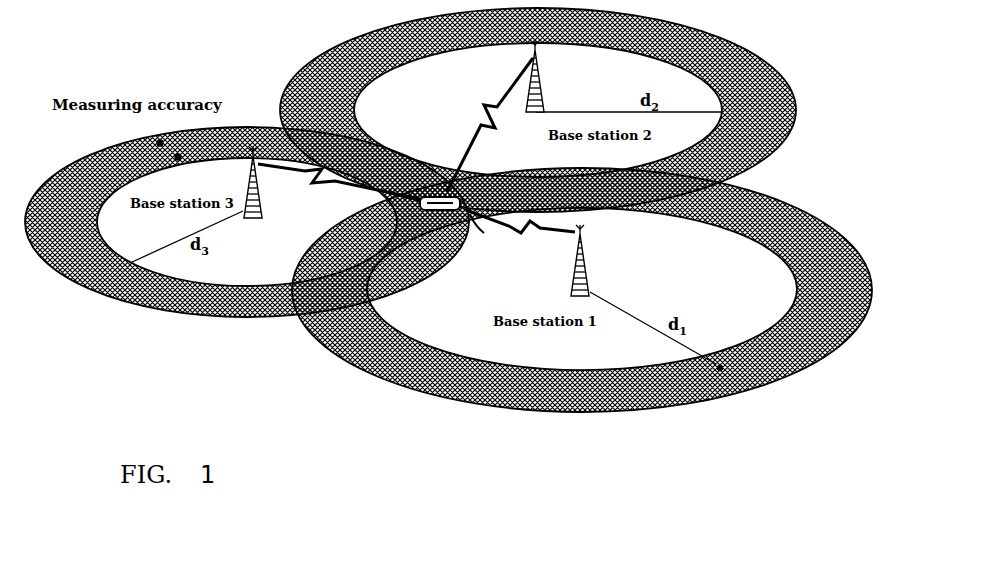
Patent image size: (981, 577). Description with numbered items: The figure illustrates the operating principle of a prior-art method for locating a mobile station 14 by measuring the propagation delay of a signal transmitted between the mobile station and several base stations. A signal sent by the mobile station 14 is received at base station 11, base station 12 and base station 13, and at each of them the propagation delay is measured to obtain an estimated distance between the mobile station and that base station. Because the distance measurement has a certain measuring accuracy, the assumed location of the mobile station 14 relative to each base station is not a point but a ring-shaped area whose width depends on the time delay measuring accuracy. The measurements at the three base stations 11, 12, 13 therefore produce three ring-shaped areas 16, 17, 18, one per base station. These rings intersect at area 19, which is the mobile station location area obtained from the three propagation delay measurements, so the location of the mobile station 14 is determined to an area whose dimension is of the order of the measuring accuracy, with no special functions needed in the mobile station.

The base station 11 is at (592, 271).
The base station 12 is at (546, 87).
The base station 13 is at (241, 178).
The mobile station 14 is at (457, 244).
The ring-shaped area 16 is at (795, 206).
The ring-shaped area 17 is at (745, 45).
The ring-shaped area 18 is at (206, 319).
The intersection area 19 is at (480, 228).